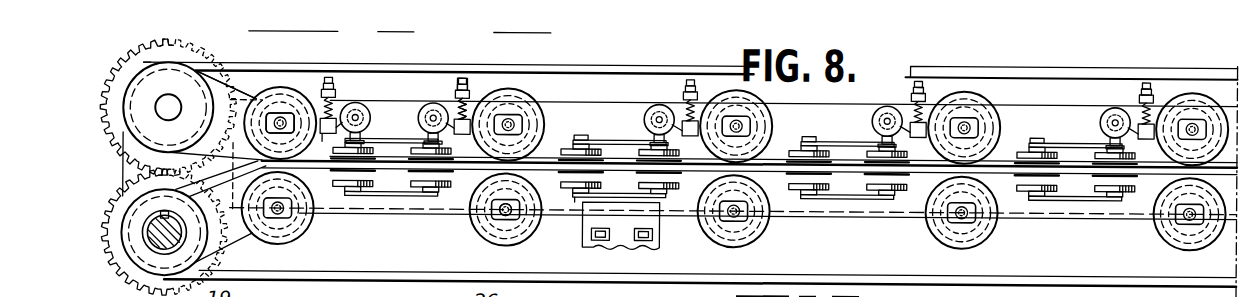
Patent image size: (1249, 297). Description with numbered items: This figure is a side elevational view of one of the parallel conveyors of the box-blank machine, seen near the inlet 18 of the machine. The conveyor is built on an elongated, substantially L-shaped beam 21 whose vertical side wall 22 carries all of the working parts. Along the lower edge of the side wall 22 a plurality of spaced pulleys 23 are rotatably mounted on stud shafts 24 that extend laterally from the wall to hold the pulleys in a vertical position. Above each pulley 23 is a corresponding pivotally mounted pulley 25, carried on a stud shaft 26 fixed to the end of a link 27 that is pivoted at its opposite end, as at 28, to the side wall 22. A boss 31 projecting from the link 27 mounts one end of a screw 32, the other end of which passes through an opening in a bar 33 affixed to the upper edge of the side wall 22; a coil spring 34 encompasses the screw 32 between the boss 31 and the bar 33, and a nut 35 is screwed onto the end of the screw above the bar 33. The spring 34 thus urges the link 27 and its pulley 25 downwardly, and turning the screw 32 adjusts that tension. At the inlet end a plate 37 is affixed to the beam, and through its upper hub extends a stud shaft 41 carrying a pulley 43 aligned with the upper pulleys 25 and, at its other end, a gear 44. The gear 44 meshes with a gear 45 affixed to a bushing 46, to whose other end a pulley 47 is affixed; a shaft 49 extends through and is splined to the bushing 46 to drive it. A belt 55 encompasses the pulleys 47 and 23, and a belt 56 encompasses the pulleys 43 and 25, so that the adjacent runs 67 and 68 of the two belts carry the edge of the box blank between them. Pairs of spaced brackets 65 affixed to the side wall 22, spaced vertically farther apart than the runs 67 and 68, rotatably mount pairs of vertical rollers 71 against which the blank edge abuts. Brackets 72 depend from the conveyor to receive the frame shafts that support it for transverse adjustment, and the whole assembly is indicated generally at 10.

The conveyor apparatus 10 is at (170, 37).
The inlet 18 is at (148, 164).
The beam 21 is at (840, 214).
The side wall 22 is at (612, 108).
The pulleys 23 is at (472, 228).
The stud shafts 24 is at (505, 215).
The pivotally mounted pulleys 25 is at (280, 88).
The stud shaft 26 is at (294, 117).
The link 27 is at (353, 108).
The pivot 28 is at (336, 125).
The boss 31 is at (325, 135).
The screw 32 is at (462, 78).
The bar 33 is at (476, 97).
The coil spring 34 is at (478, 107).
The nut 35 is at (455, 85).
The plate 37 is at (236, 96).
The stud shaft 41 is at (160, 110).
The pulley 43 is at (150, 85).
The gear 44 is at (107, 83).
The gear 45 is at (107, 207).
The bushing 46 is at (148, 247).
The pulley 47 is at (133, 227).
The shaft 49 is at (148, 233).
The belt 55 is at (993, 267).
The belt 56 is at (1062, 58).
The brackets 65 is at (386, 140).
The run 67 is at (773, 176).
The run 68 is at (770, 156).
The vertical rollers 71 is at (563, 180).
The brackets 72 is at (620, 238).